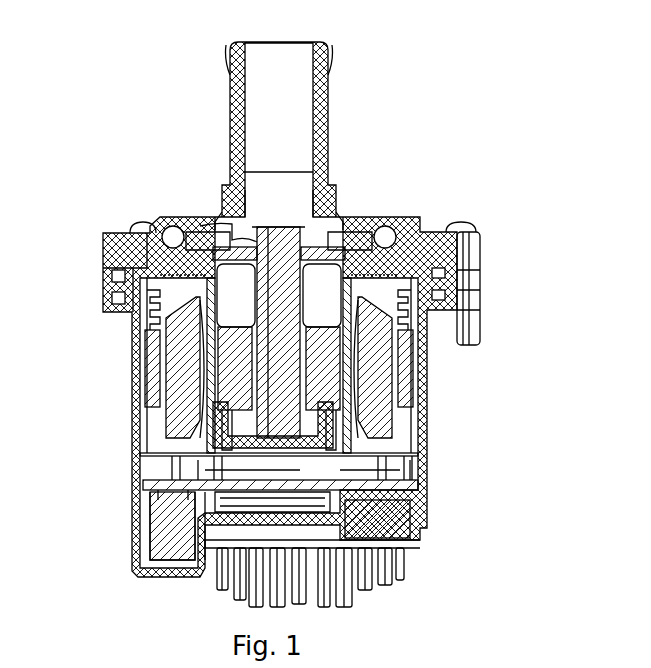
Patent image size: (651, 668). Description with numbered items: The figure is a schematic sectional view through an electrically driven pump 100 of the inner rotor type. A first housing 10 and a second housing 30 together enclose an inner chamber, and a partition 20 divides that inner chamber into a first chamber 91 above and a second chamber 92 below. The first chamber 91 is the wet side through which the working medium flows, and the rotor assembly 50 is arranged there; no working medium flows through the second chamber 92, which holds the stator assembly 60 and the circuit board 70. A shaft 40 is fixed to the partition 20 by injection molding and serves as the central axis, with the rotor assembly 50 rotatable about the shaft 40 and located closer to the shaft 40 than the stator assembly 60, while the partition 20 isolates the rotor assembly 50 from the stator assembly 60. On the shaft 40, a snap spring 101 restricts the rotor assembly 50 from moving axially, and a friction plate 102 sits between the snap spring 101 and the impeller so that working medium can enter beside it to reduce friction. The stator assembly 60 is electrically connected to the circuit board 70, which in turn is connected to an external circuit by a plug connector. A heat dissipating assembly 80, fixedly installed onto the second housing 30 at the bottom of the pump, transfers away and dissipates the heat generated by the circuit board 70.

The electrically driven pump 100 is at (262, 324).
The first housing 10 is at (125, 245).
The partition 20 is at (106, 285).
The second housing 30 is at (110, 312).
The shaft 40 is at (290, 227).
The snap spring 101 is at (247, 217).
The friction plate 102 is at (230, 218).
The first chamber 91 is at (385, 237).
The stator assembly 60 is at (305, 338).
The rotor assembly 50 is at (345, 378).
The second chamber 92 is at (370, 465).
The circuit board 70 is at (153, 482).
The heat dissipating assembly 80 is at (383, 558).